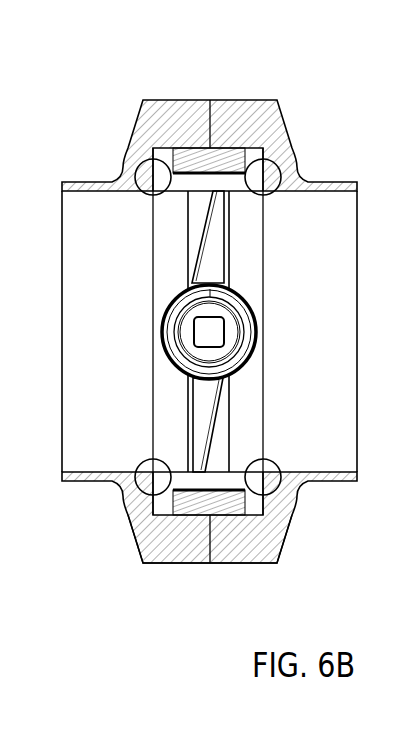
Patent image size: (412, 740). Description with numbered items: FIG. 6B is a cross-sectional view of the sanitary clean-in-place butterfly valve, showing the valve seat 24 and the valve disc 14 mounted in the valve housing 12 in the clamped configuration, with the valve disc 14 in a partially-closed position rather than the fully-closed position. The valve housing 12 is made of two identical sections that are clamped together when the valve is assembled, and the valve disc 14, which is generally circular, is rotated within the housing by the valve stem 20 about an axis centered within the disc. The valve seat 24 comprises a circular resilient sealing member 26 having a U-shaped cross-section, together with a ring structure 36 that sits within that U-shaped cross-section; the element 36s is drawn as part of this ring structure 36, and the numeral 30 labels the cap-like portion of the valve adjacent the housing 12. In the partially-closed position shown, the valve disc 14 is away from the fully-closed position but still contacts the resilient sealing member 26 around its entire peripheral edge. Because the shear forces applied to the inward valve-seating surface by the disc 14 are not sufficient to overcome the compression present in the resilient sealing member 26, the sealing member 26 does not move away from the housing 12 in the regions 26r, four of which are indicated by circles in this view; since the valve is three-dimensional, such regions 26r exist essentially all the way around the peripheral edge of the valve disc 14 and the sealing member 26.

The valve housing 12 is at (163, 542).
The valve disc 14 is at (205, 257).
The valve stem 20 is at (195, 332).
The valve seat 24 is at (280, 527).
The circular resilient sealing member 26 is at (240, 228).
The regions 26r is at (125, 152).
The cover cap 30 is at (162, 152).
The ring structure 36 is at (264, 106).
The seat surface 36s is at (215, 152).